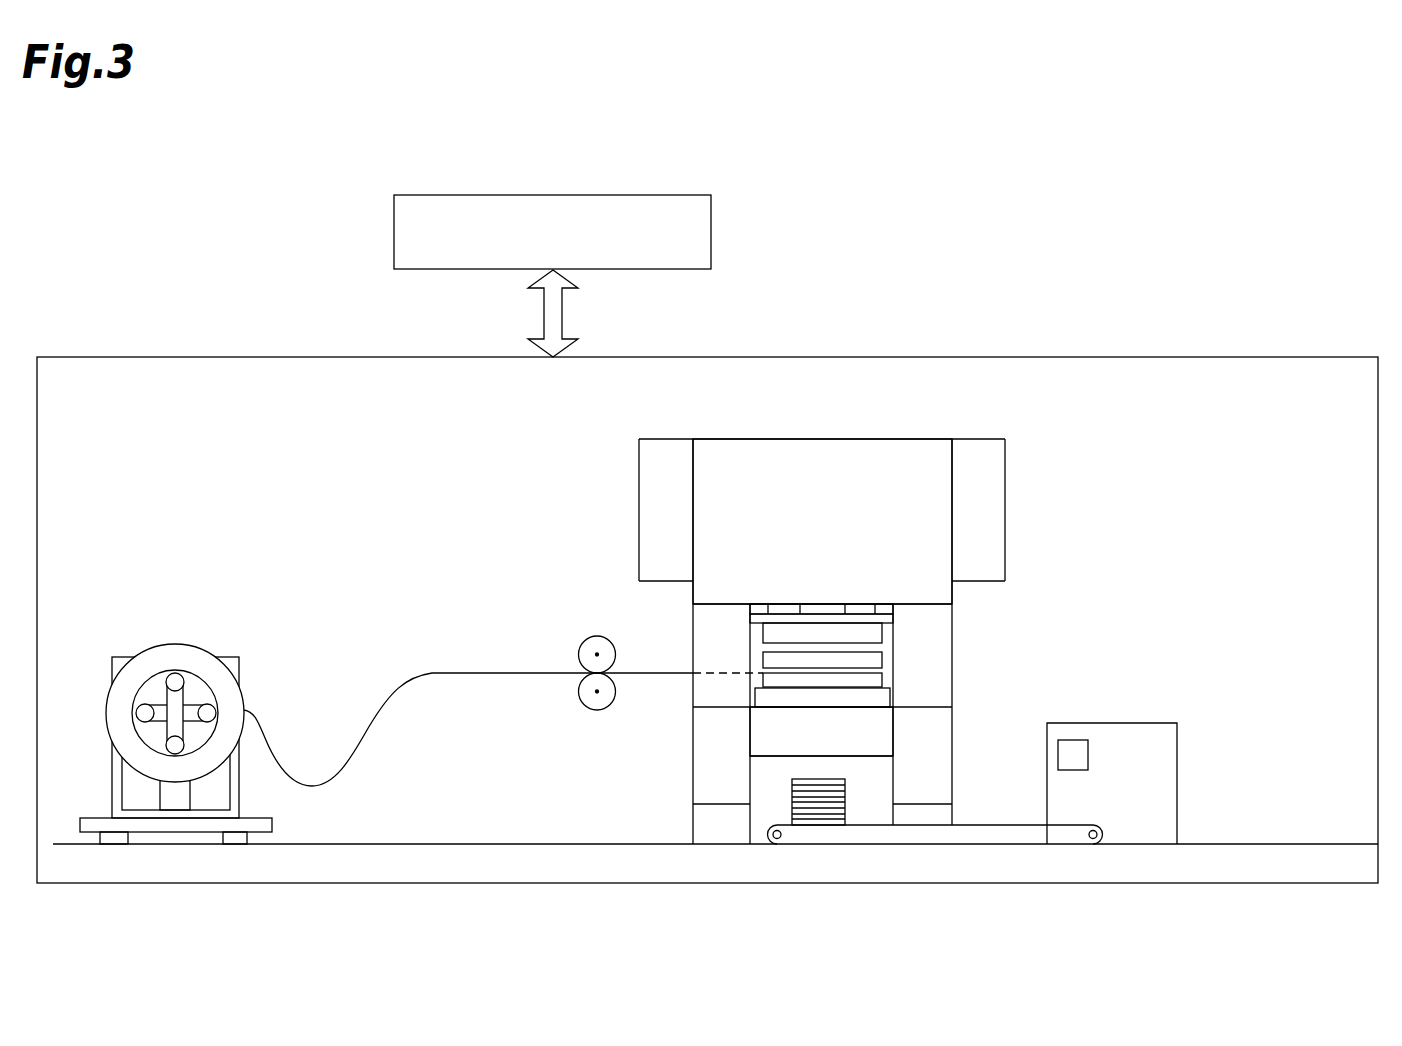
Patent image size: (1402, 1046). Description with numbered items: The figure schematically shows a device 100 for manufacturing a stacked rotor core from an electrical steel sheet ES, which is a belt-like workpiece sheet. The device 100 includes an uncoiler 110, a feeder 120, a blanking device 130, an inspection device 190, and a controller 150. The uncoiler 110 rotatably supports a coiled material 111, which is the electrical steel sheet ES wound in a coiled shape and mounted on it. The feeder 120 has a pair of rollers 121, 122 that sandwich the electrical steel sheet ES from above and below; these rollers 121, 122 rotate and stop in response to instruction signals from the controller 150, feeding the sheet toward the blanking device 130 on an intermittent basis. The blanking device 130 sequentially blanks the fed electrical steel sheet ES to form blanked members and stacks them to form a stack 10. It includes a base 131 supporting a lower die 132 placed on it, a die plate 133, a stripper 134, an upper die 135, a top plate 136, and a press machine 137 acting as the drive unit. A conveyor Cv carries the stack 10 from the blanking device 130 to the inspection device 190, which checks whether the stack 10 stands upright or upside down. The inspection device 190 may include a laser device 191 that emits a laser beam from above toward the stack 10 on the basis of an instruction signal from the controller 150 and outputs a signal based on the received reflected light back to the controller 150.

The device 100 is at (133, 230).
The controller 150 is at (712, 232).
The uncoiler 110 is at (128, 657).
The coiled material 111 is at (173, 643).
The electrical steel sheet ES is at (268, 742).
The feeder 120 is at (547, 626).
The roller 121 is at (610, 640).
The roller 122 is at (613, 705).
The blanking device 130 is at (1047, 457).
The press machine 137 is at (830, 462).
The top plate 136 is at (828, 603).
The upper die 135 is at (863, 617).
The stripper 134 is at (872, 657).
The die plate 133 is at (873, 680).
The lower die 132 is at (880, 698).
The base 131 is at (878, 733).
The stack 10 is at (760, 792).
The conveyor Cv is at (1003, 825).
The inspection device 190 is at (1177, 770).
The laser device 191 is at (1088, 752).